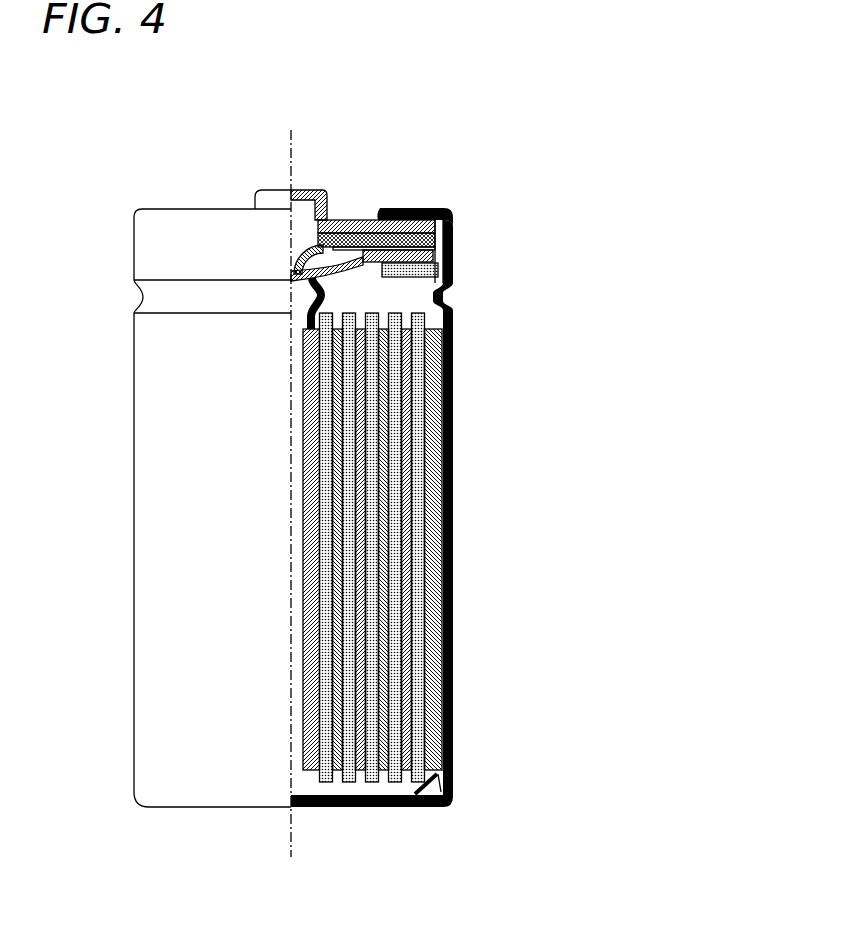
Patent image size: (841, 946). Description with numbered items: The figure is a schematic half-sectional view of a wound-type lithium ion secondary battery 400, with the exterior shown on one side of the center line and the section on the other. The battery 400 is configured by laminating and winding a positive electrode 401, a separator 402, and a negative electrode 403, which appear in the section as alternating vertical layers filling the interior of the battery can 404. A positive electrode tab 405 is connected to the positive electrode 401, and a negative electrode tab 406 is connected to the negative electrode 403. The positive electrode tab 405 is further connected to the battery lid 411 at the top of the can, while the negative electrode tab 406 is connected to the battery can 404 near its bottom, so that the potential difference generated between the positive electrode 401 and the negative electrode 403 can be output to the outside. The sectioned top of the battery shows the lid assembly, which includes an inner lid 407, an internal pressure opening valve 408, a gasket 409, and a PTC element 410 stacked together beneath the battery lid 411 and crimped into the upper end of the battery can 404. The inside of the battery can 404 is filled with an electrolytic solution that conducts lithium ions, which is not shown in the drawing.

The lithium ion secondary battery 400 is at (342, 96).
The positive electrode 401 is at (303, 762).
The separator 402 is at (323, 785).
The negative electrode 403 is at (338, 782).
The battery can 404 is at (455, 533).
The positive electrode tab 405 is at (323, 290).
The negative electrode tab 406 is at (440, 805).
The inner lid 407 is at (453, 267).
The internal pressure opening valve 408 is at (310, 262).
The gasket 409 is at (455, 225).
The PTC element 410 is at (405, 213).
The battery lid 411 is at (350, 217).